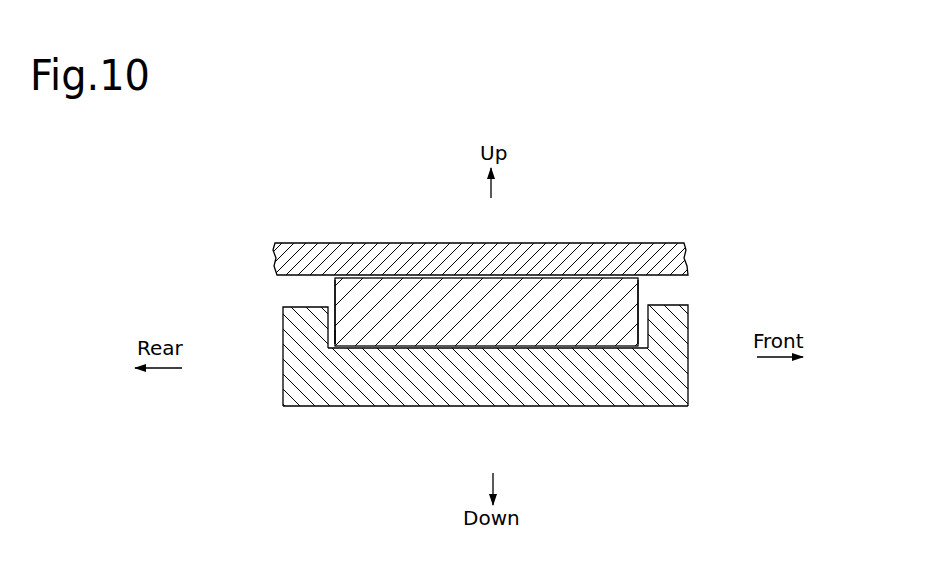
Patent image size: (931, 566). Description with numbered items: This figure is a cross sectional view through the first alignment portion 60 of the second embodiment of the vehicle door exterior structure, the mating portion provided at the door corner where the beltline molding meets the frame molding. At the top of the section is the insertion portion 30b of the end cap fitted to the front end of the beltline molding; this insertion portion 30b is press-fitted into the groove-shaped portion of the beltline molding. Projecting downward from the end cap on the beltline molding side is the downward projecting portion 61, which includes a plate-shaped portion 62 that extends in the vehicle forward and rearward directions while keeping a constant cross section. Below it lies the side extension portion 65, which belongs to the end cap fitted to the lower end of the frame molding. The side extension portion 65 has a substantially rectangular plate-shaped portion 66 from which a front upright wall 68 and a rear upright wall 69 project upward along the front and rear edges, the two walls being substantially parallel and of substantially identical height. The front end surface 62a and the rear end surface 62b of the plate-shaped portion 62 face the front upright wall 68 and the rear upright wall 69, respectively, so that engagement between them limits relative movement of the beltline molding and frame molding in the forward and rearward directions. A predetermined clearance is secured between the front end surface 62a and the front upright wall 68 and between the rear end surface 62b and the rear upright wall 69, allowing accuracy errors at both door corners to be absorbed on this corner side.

The insertion portion 30b is at (613, 248).
The first alignment portion 60 is at (705, 257).
The downward projecting portion 61 is at (333, 294).
The plate-shaped portion 62 is at (538, 327).
The front end surface 62a is at (639, 330).
The rear end surface 62b is at (328, 332).
The side extension portion 65 is at (343, 410).
The plate-shaped portion 66 is at (457, 373).
The front upright wall 68 is at (678, 313).
The rear upright wall 69 is at (302, 322).